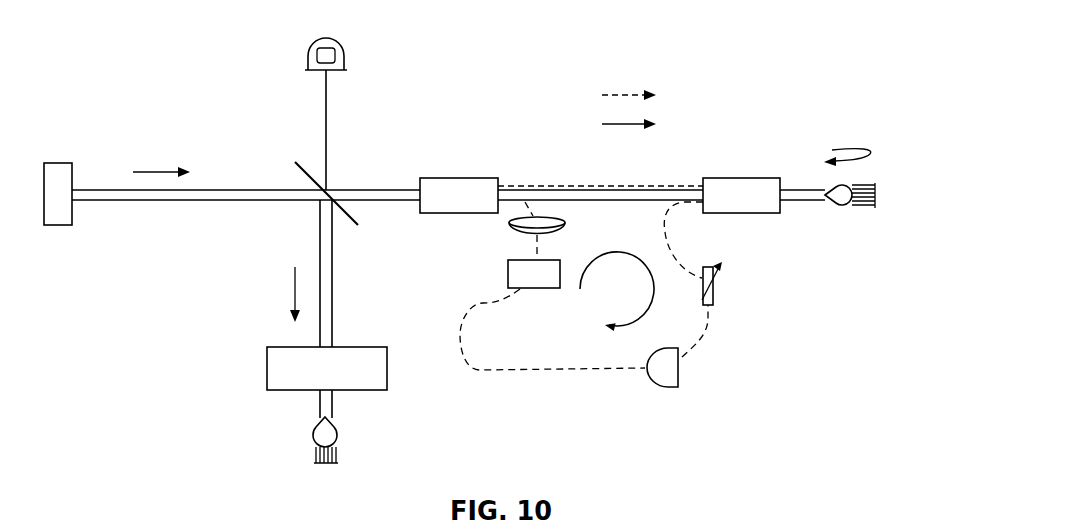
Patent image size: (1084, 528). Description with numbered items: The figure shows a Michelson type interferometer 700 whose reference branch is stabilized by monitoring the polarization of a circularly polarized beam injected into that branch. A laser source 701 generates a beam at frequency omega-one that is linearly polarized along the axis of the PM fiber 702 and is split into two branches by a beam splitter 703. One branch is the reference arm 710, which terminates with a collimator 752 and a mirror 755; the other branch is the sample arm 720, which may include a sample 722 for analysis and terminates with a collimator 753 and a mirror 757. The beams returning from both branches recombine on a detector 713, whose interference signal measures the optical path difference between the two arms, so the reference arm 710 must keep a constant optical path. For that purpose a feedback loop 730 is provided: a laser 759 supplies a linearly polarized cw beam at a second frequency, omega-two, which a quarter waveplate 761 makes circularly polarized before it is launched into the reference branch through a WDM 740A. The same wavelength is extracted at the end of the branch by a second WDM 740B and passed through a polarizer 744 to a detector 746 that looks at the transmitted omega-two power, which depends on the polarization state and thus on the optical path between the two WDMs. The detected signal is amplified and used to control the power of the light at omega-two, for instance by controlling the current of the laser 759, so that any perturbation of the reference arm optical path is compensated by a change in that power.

The Michelson type interferometer 700 is at (720, 426).
The laser source 701 is at (58, 163).
The PM fiber 702 is at (267, 202).
The beam splitter 703 is at (308, 166).
The detector 713 is at (346, 52).
The WDM 740A is at (460, 178).
The reference arm 710 is at (650, 202).
The second WDM 740B is at (742, 178).
The collimator 752 is at (843, 190).
The mirror 755 is at (877, 195).
The polarizer 744 is at (715, 292).
The detector 746 is at (680, 375).
The feedback loop 730 is at (475, 308).
The laser 759 is at (542, 289).
The quarter waveplate 761 is at (515, 235).
The sample 722 is at (265, 367).
The sample arm 720 is at (333, 402).
The collimator 753 is at (313, 433).
The mirror 757 is at (325, 465).